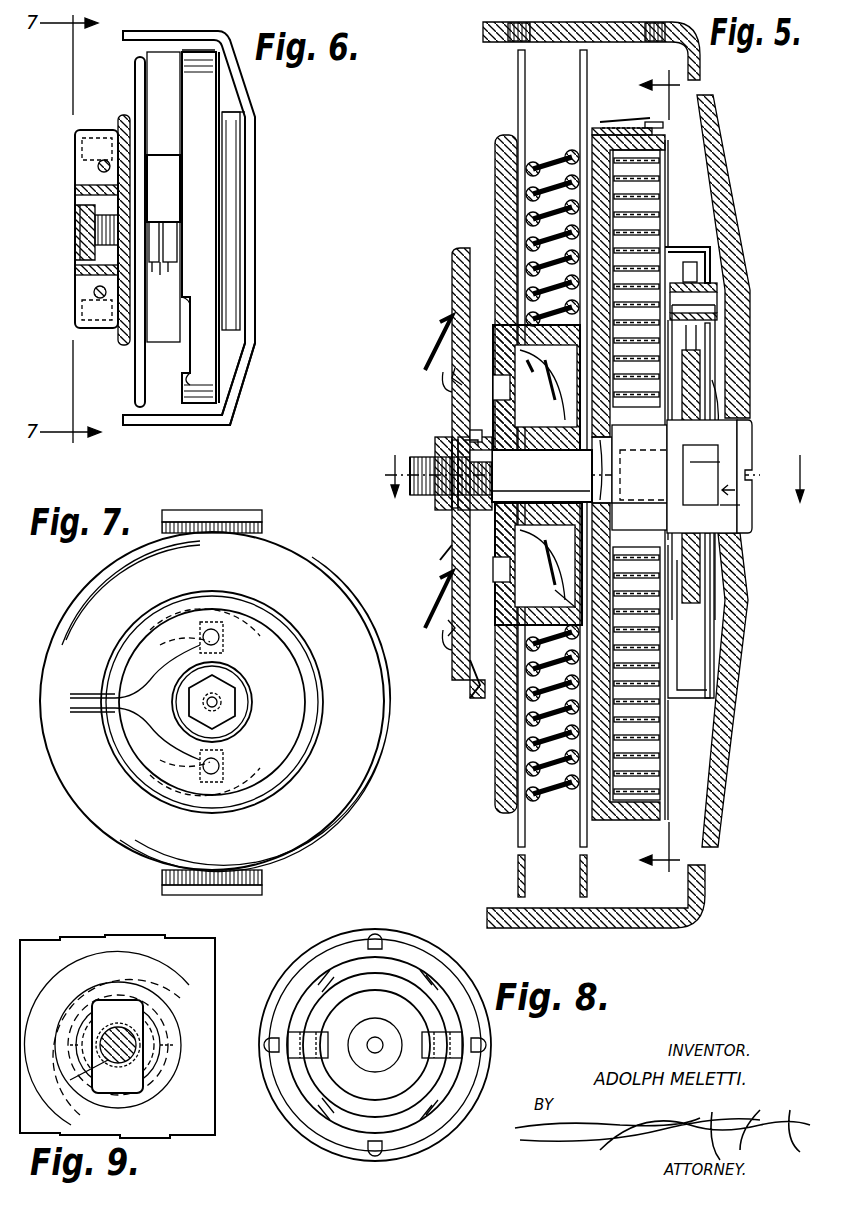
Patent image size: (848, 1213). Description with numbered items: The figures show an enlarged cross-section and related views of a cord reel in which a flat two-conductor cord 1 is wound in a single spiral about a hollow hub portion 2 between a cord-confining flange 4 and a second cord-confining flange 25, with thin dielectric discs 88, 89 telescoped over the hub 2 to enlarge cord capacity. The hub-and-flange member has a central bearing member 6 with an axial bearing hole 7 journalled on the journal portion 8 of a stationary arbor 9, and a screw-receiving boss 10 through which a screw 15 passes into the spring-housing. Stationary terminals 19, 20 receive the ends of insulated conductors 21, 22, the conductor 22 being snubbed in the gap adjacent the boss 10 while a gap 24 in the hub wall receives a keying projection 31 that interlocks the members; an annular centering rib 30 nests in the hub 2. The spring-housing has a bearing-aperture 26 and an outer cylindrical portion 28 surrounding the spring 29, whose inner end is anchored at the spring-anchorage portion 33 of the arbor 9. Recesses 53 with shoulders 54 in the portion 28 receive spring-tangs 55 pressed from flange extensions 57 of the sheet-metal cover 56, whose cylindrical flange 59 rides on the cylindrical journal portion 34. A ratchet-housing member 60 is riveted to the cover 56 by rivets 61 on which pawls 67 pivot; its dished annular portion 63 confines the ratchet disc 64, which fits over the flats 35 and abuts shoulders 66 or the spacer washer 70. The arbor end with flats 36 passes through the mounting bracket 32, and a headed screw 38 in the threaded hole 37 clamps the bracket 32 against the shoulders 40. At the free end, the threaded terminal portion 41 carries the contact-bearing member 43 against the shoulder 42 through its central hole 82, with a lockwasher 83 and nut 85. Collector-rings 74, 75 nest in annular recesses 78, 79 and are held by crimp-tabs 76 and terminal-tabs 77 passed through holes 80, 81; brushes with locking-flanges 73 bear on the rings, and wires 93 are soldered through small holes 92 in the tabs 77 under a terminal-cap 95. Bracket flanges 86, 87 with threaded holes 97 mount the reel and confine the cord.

In FIG. 5, the cord 1 is at (565, 150).
In FIG. 6, the cord 1 is at (172, 262).
In FIG. 5, the hub portion 2 is at (548, 585).
In FIG. 6, the hub portion 2 is at (163, 188).
In FIG. 5, the cord-confining flange 4 is at (495, 180).
In FIG. 6, the cord-confining flange 4 is at (135, 78).
In FIG. 7, the cord-confining flange 4 is at (345, 808).
In FIG. 5, the central bushing-like bearing member 6 is at (545, 405).
In FIG. 5, the axial bearing hole 7 is at (540, 455).
In FIG. 5, the journal portion of arbor 8 is at (542, 476).
In FIG. 5, the stationary arbor 9 is at (722, 404).
In FIG. 9, the stationary arbor 9 is at (122, 1078).
In FIG. 5, the screw-receiving boss 10 is at (597, 465).
In FIG. 5, the screw 15 is at (646, 471).
In FIG. 5, the stationary electrical terminal 19 is at (505, 569).
In FIG. 5, the stationary electrical terminal 20 is at (505, 387).
In FIG. 5, the insulated conductor 21 is at (545, 566).
In FIG. 5, the insulated conductor 22 is at (546, 380).
In FIG. 6, the gap in hub wall 24 is at (160, 222).
In FIG. 5, the cord-confining flange of spring-housing 25 is at (590, 805).
In FIG. 6, the cord-confining flange of spring-housing 25 is at (182, 102).
In FIG. 5, the central bearing-aperture 26 is at (598, 455).
In FIG. 5, the outer cylindrical portion 28 is at (662, 140).
In FIG. 6, the outer cylindrical portion 28 is at (195, 128).
In FIG. 5, the spring 29 is at (660, 212).
In FIG. 5, the annular centering rib 30 is at (567, 598).
In FIG. 6, the keying projection 31 is at (178, 220).
In FIG. 5, the mounting bracket 32 is at (705, 95).
In FIG. 6, the mounting bracket 32 is at (282, 182).
In FIG. 7, the mounting bracket 32 is at (262, 528).
In FIG. 9, the mounting bracket 32 is at (220, 985).
In FIG. 5, the spring-anchorage portion 33 is at (639, 477).
In FIG. 9, the spring-anchorage portion 33 is at (178, 990).
In FIG. 5, the cylindrical journal portion 34 is at (639, 514).
In FIG. 9, the cylindrical journal portion 34 is at (141, 1001).
In FIG. 5, the pair of flats 35 is at (708, 469).
In FIG. 9, the pair of flats 35 is at (70, 1046).
In FIG. 5, the pair of flats 36 is at (720, 448).
In FIG. 9, the pair of flats 36 is at (80, 1034).
In FIG. 9, the screw-threaded hole 37 is at (119, 1017).
In FIG. 5, the headed screw 38 is at (752, 430).
In FIG. 9, the headed screw 38 is at (90, 1070).
In FIG. 5, the shoulders 40 is at (715, 500).
In FIG. 5, the screw-threaded terminal portion 41 is at (420, 456).
In FIG. 6, the screw-threaded terminal portion 41 is at (95, 240).
In FIG. 7, the screw-threaded terminal portion 41 is at (238, 698).
In FIG. 5, the annular shoulder 42 is at (452, 505).
In FIG. 5, the stationary contact-bearing member 43 is at (452, 305).
In FIG. 6, the stationary contact-bearing member 43 is at (122, 125).
In FIG. 7, the stationary contact-bearing member 43 is at (320, 708).
In FIG. 8, the stationary contact-bearing member 43 is at (491, 1058).
In FIG. 5, the recesses 53 is at (598, 126).
In FIG. 5, the shoulders 54 is at (652, 131).
In FIG. 5, the spring-tangs 55 is at (659, 111).
In FIG. 6, the spring-tangs 55 is at (205, 350).
In FIG. 5, the sheet-metal cover 56 is at (668, 180).
In FIG. 6, the sheet-metal cover 56 is at (220, 95).
In FIG. 5, the flange extensions 57 is at (626, 117).
In FIG. 6, the flange extensions 57 is at (180, 332).
In FIG. 5, the cylindrical flange 59 is at (690, 440).
In FIG. 5, the ratchet-housing member 60 is at (712, 255).
In FIG. 6, the ratchet-housing member 60 is at (240, 162).
In FIG. 5, the rivets 61 is at (717, 287).
In FIG. 5, the dished annular portion 63 is at (718, 418).
In FIG. 5, the ratchet disc 64 is at (700, 375).
In FIG. 5, the shoulders 66 is at (735, 490).
In FIG. 5, the pawls 67 is at (697, 268).
In FIG. 5, the spacer washer 70 is at (680, 600).
In FIG. 5, the locking-flanges 73 is at (536, 381).
In FIG. 8, the outer collector-ring 74 is at (400, 995).
In FIG. 8, the inner collector-ring 75 is at (435, 990).
In FIG. 5, the crimp-tab 76 is at (445, 382).
In FIG. 5, the terminal-tab 77 is at (442, 322).
In FIG. 6, the terminal-tab 77 is at (75, 190).
In FIG. 7, the terminal-tab 77 is at (223, 640).
In FIG. 5, the annular recess 78 is at (440, 624).
In FIG. 5, the annular recess 79 is at (449, 374).
In FIG. 5, the holes 80 is at (470, 662).
In FIG. 5, the holes 81 is at (436, 551).
In FIG. 5, the central hole 82 is at (470, 436).
In FIG. 8, the central hole 82 is at (372, 1052).
In FIG. 5, the lockwasher 83 is at (465, 515).
In FIG. 5, the nut 85 is at (435, 500).
In FIG. 6, the nut 85 is at (78, 225).
In FIG. 7, the nut 85 is at (222, 706).
In FIG. 5, the bracket flange 86 is at (575, 42).
In FIG. 6, the bracket flange 86 is at (126, 38).
In FIG. 7, the bracket flange 86 is at (262, 512).
In FIG. 5, the bracket flange 87 is at (635, 920).
In FIG. 6, the bracket flange 87 is at (135, 422).
In FIG. 7, the bracket flange 87 is at (262, 890).
In FIG. 5, the cord-confining disc 88 is at (518, 95).
In FIG. 5, the cord-confining disc 89 is at (580, 95).
In FIG. 5, the small holes 92 is at (425, 350).
In FIG. 6, the wires 93 is at (98, 166).
In FIG. 7, the wires 93 is at (200, 634).
In FIG. 6, the terminal-cap 95 is at (75, 134).
In FIG. 7, the terminal-cap 95 is at (278, 660).
In FIG. 5, the screw-threaded holes 97 is at (512, 42).